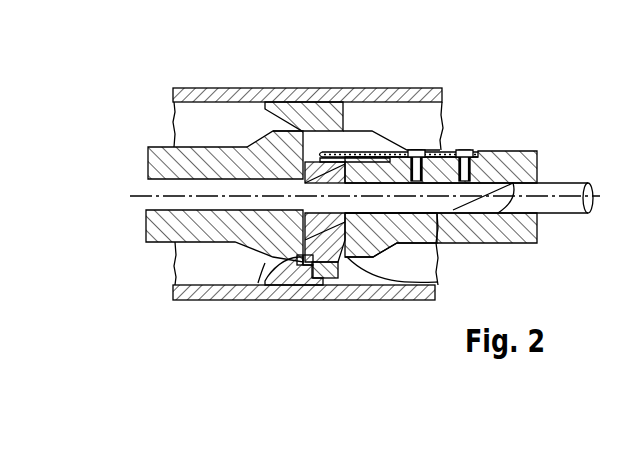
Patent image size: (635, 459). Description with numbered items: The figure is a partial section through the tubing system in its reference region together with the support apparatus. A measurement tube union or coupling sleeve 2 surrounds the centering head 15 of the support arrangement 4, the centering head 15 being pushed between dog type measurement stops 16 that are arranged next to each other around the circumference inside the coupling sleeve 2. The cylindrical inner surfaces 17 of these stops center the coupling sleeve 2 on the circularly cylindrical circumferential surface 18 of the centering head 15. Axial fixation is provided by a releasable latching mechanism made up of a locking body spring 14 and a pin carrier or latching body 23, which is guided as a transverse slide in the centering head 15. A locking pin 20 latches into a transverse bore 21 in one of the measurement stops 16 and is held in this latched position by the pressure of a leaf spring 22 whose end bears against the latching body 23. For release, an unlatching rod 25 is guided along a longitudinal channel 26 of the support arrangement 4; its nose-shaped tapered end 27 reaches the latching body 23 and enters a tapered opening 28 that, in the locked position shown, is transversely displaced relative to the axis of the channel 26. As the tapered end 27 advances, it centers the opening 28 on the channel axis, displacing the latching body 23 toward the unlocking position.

The measurement tube union or coupling sleeve 2 is at (200, 88).
The support arrangement 4 is at (160, 150).
The locking body spring 14 is at (358, 146).
The centering head 15 is at (292, 140).
The measurement stop 16 is at (302, 114).
The cylindrical inner surface 17 is at (263, 263).
The circularly cylindrical circumferential surface 18 is at (342, 268).
The locking pin 20 is at (343, 270).
The transverse bore 21 is at (293, 300).
The leaf spring 22 is at (390, 140).
The pin carrier or latching body 23 is at (277, 127).
The release member or unlatching rod 25 is at (560, 185).
The longitudinal channel 26 is at (448, 243).
The nose-shaped tapered end 27 is at (487, 200).
The tapered opening or hole 28 is at (437, 282).